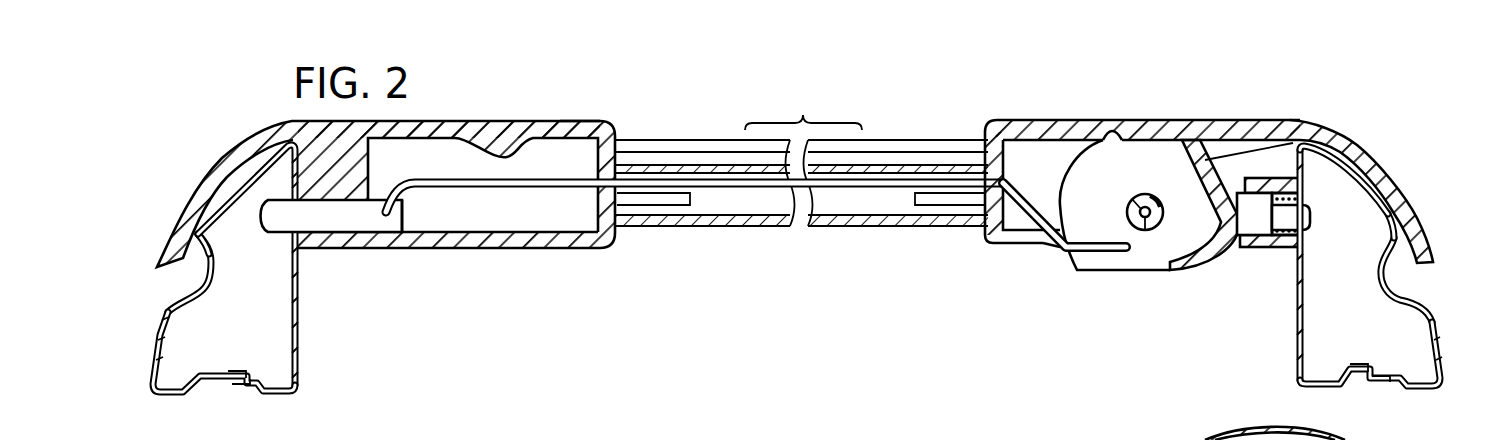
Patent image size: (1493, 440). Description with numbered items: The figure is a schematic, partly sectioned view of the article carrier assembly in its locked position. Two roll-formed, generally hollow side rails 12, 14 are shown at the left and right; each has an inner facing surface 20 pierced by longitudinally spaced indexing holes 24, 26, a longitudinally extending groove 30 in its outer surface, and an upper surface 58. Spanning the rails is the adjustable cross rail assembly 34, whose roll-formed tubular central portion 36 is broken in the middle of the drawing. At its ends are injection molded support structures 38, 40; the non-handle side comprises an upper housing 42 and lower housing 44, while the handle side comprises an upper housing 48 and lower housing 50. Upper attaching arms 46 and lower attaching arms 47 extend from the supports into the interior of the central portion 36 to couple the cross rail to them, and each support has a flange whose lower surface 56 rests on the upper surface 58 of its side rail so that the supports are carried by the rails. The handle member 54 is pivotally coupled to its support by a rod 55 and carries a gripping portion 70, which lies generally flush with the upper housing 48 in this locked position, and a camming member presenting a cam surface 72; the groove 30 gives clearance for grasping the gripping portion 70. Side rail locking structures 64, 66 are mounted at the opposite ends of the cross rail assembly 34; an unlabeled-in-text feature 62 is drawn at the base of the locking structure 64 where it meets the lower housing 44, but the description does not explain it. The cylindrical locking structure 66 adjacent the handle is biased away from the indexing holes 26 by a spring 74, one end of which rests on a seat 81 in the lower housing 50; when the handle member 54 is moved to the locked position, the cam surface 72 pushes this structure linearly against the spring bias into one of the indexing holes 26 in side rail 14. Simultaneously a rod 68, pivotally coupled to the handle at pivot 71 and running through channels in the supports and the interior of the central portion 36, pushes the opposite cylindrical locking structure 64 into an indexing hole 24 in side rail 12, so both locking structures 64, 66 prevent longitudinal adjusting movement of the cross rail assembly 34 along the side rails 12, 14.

The side rail 12 is at (255, 292).
The side rail 14 is at (1393, 287).
The inner facing surface 20 is at (290, 374).
The indexing holes 24 is at (290, 238).
The indexing holes 26 is at (1303, 232).
The groove 30 is at (206, 303).
The cross rail assembly 34 is at (1150, 178).
The central portion 36 is at (801, 182).
The support structure 38 is at (988, 245).
The support structure 40 is at (451, 196).
The upper housing 42 is at (582, 118).
The lower housing 44 is at (537, 249).
The upper attaching arms 46 is at (676, 176).
The lower attaching arms 47 is at (656, 198).
The upper housing 48 is at (1057, 120).
The lower housing 50 is at (1043, 246).
The handle member 54 is at (1150, 195).
The rod 55 is at (1146, 231).
The lower surface 56 is at (201, 252).
The upper surface 58 is at (809, 193).
The tongue base 62 is at (399, 236).
The side rail locking structure 64 is at (340, 222).
The side rail locking structure 66 is at (1252, 203).
The rod 68 is at (731, 189).
The gripping portion 70 is at (1407, 192).
The pivot 71 is at (1120, 252).
The cam surface 72 is at (1232, 232).
The spring 74 is at (1300, 193).
The seat 81 is at (1303, 245).